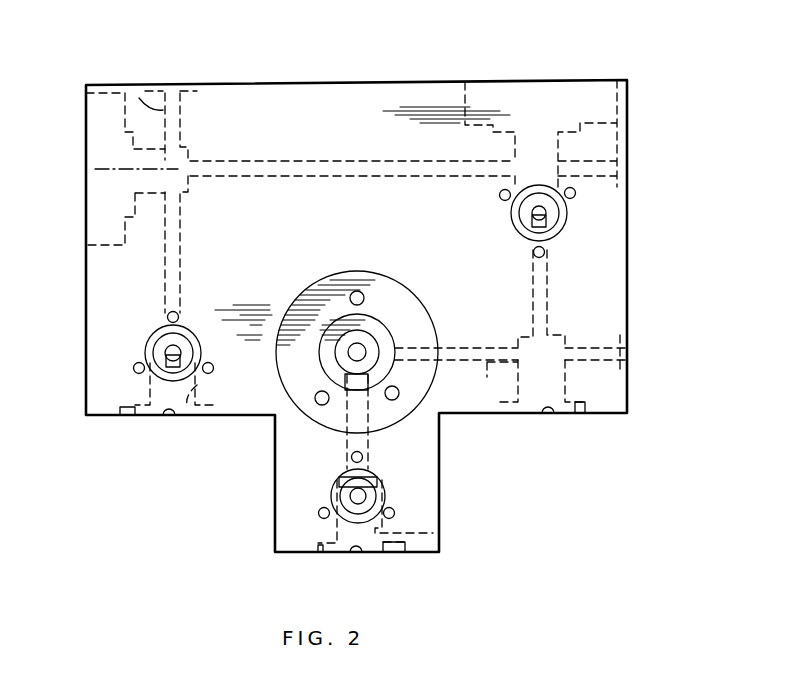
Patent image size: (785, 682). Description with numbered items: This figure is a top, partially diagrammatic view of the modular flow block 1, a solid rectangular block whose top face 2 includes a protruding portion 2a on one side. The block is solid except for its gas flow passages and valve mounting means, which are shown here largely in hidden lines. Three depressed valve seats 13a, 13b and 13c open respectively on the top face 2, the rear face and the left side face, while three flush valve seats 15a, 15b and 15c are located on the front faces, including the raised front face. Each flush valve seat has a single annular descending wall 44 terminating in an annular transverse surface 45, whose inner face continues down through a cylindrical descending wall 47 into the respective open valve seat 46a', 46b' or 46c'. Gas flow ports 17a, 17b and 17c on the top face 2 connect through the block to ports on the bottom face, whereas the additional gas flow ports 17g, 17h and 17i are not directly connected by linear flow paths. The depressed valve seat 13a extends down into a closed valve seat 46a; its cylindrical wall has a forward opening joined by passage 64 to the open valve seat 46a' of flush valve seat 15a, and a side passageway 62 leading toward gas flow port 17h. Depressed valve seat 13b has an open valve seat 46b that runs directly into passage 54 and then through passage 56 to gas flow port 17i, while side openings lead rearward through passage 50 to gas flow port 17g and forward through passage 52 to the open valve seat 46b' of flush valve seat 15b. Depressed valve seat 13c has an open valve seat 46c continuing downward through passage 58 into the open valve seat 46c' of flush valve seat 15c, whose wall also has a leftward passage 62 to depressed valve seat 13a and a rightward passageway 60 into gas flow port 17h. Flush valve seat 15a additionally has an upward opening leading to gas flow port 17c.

The modular flow block 1 is at (668, 164).
The top face 2 is at (404, 211).
The protruding portion 2a is at (428, 497).
The depressed valve seat 13a is at (400, 302).
The depressed valve seat 13b is at (93, 209).
The depressed valve seat 13c is at (522, 82).
The flush valve seat 15a is at (358, 548).
The flush valve seat 15b is at (165, 418).
The flush valve seat 15c is at (548, 413).
The gas flow port 17a is at (563, 222).
The gas flow port 17b is at (152, 340).
The gas flow port 17c is at (386, 499).
The gas flow port 17g is at (173, 87).
The gas flow port 17h is at (627, 357).
The gas flow port 17i is at (627, 160).
The annular descending wall 44 is at (118, 410).
The annular transverse surface 45 is at (147, 405).
The closed valve seat 46a is at (406, 335).
The open valve seat 46a' is at (426, 477).
The open valve seat 46b is at (232, 174).
The open valve seat 46b' is at (213, 317).
The open valve seat 46c is at (624, 204).
The open valve seat 46c' is at (597, 349).
The cylindrical descending wall 47 is at (185, 410).
The passage 50 is at (141, 86).
The passage 52 is at (160, 292).
The passage 54 is at (335, 160).
The passage 56 is at (585, 165).
The passage 58 is at (547, 282).
The passageway 60 is at (632, 393).
The side passageway 62 is at (490, 363).
The passage 64 is at (347, 418).